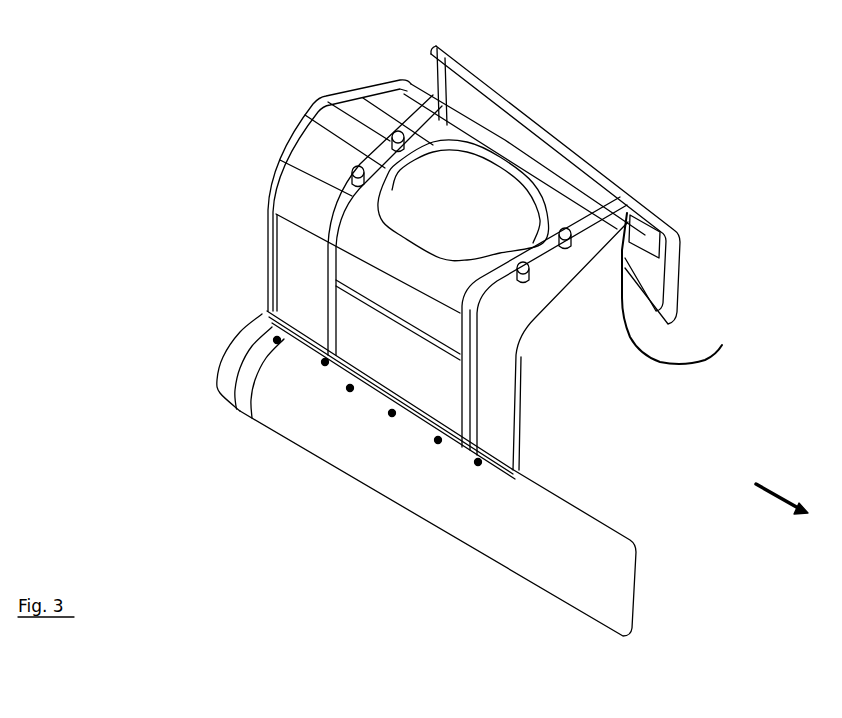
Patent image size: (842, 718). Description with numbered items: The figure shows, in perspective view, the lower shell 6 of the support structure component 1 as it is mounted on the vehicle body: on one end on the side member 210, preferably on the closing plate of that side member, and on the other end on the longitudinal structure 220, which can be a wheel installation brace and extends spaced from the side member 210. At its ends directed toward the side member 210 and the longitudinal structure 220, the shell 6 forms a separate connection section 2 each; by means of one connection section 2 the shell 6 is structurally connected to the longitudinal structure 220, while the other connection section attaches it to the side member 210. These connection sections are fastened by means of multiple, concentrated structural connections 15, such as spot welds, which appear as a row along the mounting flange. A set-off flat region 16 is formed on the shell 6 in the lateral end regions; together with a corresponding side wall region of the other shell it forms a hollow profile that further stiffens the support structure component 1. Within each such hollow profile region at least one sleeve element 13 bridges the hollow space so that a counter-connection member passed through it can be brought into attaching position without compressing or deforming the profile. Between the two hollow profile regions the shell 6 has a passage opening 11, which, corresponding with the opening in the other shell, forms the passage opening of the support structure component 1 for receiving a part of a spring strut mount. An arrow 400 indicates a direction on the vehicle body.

The support structure component 1 is at (286, 103).
The connection section 2 is at (689, 288).
The shell 6 is at (445, 328).
The passage opening 11 is at (463, 200).
The sleeve element 13 is at (392, 140).
The structural connections 15 is at (347, 391).
The set-off flat region 16 is at (345, 135).
The side member 210 is at (568, 565).
The longitudinal structure 220 is at (608, 168).
The direction arrow 400 is at (773, 498).